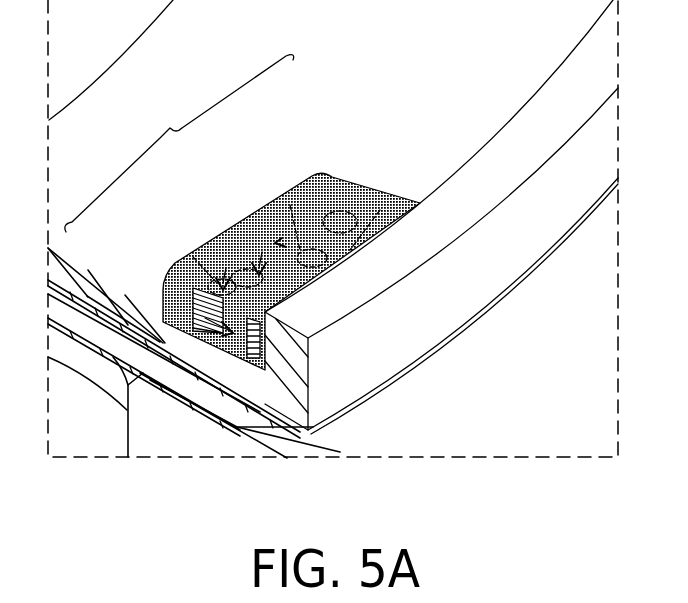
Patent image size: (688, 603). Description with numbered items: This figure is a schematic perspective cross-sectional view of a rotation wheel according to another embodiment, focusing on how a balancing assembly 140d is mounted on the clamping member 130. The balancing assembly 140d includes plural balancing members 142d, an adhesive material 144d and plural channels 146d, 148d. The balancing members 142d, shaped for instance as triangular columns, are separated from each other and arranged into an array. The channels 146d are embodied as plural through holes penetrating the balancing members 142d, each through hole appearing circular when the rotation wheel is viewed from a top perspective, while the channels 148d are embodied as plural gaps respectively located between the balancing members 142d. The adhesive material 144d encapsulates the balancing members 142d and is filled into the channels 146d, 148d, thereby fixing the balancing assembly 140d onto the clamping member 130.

The clamping member 130 is at (430, 310).
The balancing assembly 140d is at (270, 236).
The balancing members 142d is at (180, 256).
The adhesive material 144d is at (282, 238).
The channels 146d is at (178, 318).
The channels 148d is at (198, 250).